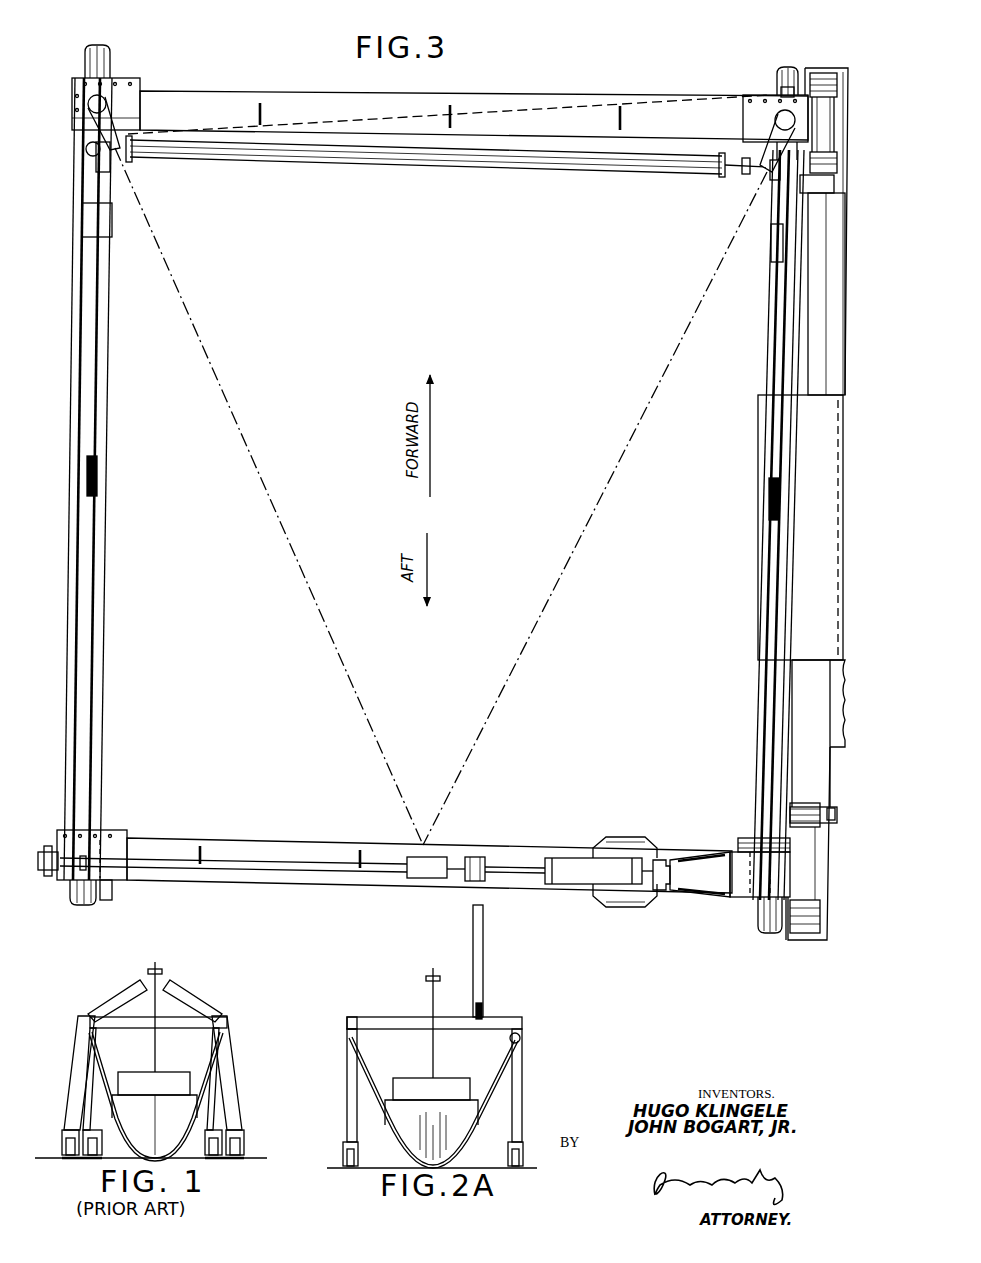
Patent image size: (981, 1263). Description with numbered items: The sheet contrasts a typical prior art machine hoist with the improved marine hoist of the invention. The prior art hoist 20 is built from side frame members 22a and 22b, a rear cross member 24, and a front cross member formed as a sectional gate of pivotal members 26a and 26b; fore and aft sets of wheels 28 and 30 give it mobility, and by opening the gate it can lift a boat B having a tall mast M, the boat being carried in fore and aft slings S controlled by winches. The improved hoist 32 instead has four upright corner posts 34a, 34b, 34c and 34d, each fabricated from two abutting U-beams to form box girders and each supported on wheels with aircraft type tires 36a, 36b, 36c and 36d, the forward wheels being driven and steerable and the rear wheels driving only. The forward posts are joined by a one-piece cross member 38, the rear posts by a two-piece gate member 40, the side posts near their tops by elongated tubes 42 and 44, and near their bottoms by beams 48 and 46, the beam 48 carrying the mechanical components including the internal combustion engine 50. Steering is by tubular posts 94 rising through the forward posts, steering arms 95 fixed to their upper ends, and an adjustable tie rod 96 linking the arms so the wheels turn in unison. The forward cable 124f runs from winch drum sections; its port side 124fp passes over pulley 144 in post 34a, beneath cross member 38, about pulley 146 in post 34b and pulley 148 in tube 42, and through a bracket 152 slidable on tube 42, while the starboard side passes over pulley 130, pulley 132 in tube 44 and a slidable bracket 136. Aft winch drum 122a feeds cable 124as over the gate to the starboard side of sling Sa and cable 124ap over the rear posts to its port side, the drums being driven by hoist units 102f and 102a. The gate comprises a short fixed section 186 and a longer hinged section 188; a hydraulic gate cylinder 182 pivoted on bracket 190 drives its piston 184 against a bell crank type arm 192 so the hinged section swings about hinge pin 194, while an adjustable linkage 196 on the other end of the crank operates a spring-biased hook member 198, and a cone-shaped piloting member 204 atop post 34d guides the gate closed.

In FIG. 1, the hoist 20 is at (238, 1034).
In FIG. 1, the side frame member 22a is at (222, 1048).
In FIG. 1, the side frame member 22b is at (76, 1062).
In FIG. 1, the rear cross member 24 is at (112, 1028).
In FIG. 1, the pivotal member 26a is at (186, 1003).
In FIG. 1, the pivotal member 26b is at (114, 1000).
In FIG. 1, the fore set of wheels 28 is at (62, 1150).
In FIG. 1, the aft set of wheels 30 is at (86, 1158).
In FIG. 3, the hoist 32 is at (535, 82).
In FIG. 2A, the hoist 32 is at (543, 1018).
In FIG. 3, the corner post 34a is at (745, 95).
In FIG. 2A, the corner post 34a is at (346, 1112).
In FIG. 3, the corner post 34b is at (118, 80).
In FIG. 3, the corner post 34c is at (750, 898).
In FIG. 2A, the corner post 34c is at (518, 1112).
In FIG. 3, the corner post 34d is at (65, 886).
In FIG. 3, the wheel 36a is at (795, 68).
In FIG. 3, the wheel 36b is at (85, 57).
In FIG. 3, the wheel 36c is at (772, 937).
In FIG. 2A, the wheel 36c is at (516, 1167).
In FIG. 3, the wheel 36d is at (72, 910).
In FIG. 2A, the wheel 36d is at (350, 1167).
In FIG. 3, the cross member 38 is at (222, 100).
In FIG. 2A, the cross member 38 is at (392, 1017).
In FIG. 3, the gate member 40 is at (356, 838).
In FIG. 2A, the gate member 40 is at (490, 1000).
In FIG. 3, the elongated tube 42 is at (105, 342).
In FIG. 3, the elongated tube 44 is at (770, 338).
In FIG. 3, the beam 46 is at (70, 622).
In FIG. 3, the beam 48 is at (790, 700).
In FIG. 3, the internal combustion engine 50 is at (760, 580).
In FIG. 3, the tubular post 94 is at (88, 106).
In FIG. 3, the steering arm 95 is at (112, 108).
In FIG. 3, the tie rod 96 is at (330, 168).
In FIG. 3, the hoist unit 102a is at (800, 947).
In FIG. 3, the hoist unit 102f is at (827, 60).
In FIG. 3, the winch drum 122a is at (836, 806).
In FIG. 3, the cable 124f is at (90, 388).
In FIG. 3, the cable 124fp is at (740, 98).
In FIG. 3, the cable 124as is at (768, 838).
In FIG. 3, the cable 124ap is at (787, 942).
In FIG. 3, the pulley 130 is at (784, 178).
In FIG. 3, the pulley 132 is at (770, 505).
In FIG. 3, the bracket 136 is at (774, 243).
In FIG. 3, the pulley 144 is at (785, 86).
In FIG. 3, the pulley 146 is at (87, 152).
In FIG. 3, the pulley 148 is at (88, 490).
In FIG. 3, the bracket 152 is at (90, 218).
In FIG. 3, the hydraulic gate cylinder 182 is at (562, 860).
In FIG. 3, the piston 184 is at (520, 866).
In FIG. 3, the fixed section 186 is at (700, 860).
In FIG. 3, the hinged section 188 is at (258, 836).
In FIG. 3, the bracket 190 is at (664, 858).
In FIG. 3, the bell crank type arm 192 is at (468, 858).
In FIG. 3, the hinge pin 194 is at (638, 908).
In FIG. 3, the adjustable linkage 196 is at (285, 880).
In FIG. 3, the hook member 198 is at (40, 852).
In FIG. 2A, the cone-shaped piloting member 204 is at (355, 1017).
In FIG. 1, the mast M is at (163, 972).
In FIG. 2A, the mast M is at (430, 976).
In FIG. 1, the boat B is at (168, 1105).
In FIG. 2A, the boat B is at (405, 1105).
In FIG. 1, the sling S is at (211, 1063).
In FIG. 2A, the aft sling Sa is at (500, 1062).